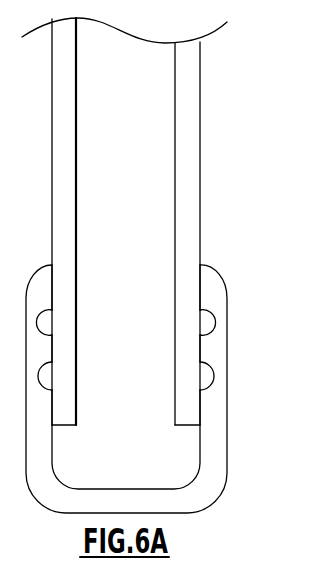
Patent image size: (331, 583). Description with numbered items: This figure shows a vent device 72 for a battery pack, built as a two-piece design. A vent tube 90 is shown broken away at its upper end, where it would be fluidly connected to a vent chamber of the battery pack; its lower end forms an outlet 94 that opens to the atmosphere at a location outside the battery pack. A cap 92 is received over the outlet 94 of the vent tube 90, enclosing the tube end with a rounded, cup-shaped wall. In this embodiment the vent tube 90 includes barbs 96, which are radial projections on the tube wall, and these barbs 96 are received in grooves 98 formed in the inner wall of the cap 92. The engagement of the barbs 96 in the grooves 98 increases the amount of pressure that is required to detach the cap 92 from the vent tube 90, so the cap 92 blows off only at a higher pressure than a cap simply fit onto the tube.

The vent device 72 is at (162, 265).
The vent tube 90 is at (189, 179).
The cap 92 is at (215, 440).
The outlet 94 is at (123, 412).
The barbs 96 is at (47, 377).
The grooves 98 is at (214, 373).